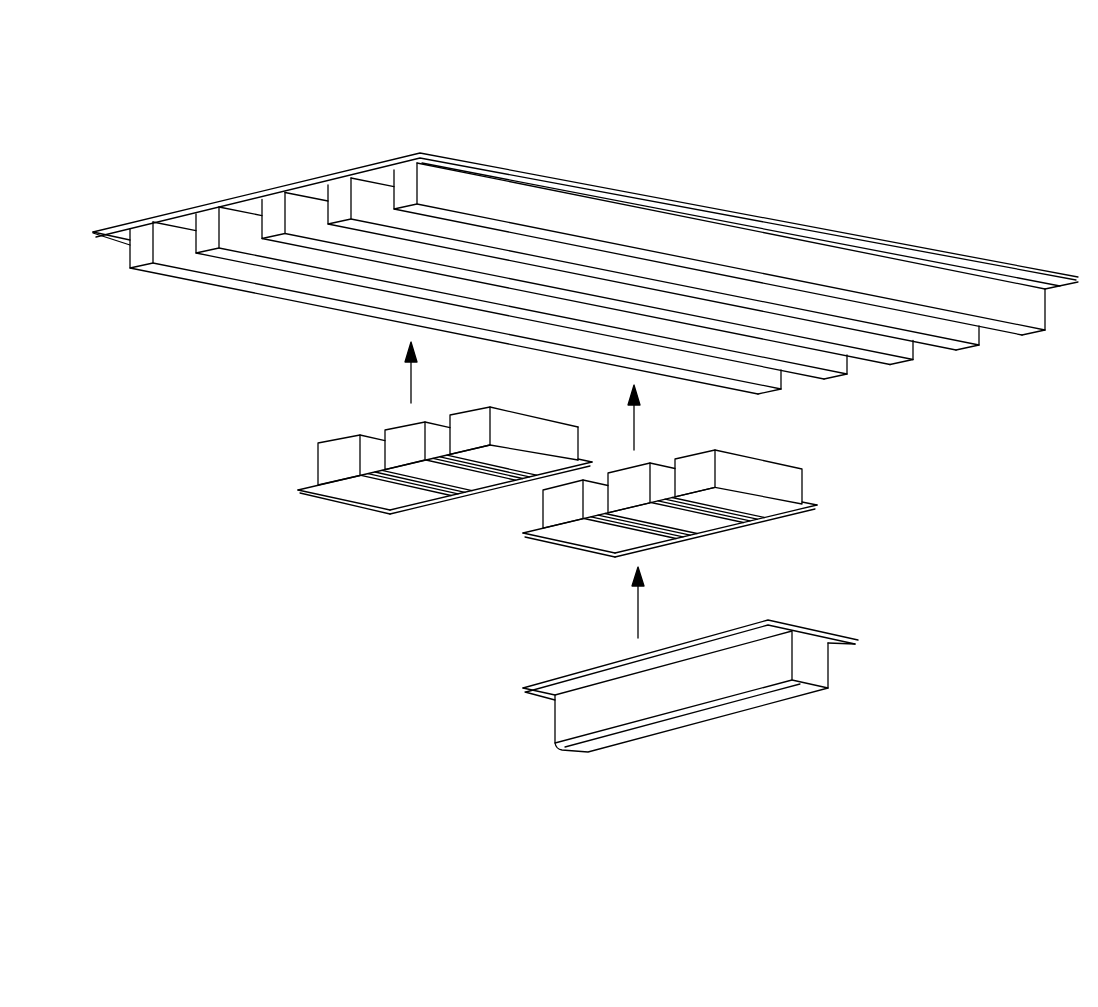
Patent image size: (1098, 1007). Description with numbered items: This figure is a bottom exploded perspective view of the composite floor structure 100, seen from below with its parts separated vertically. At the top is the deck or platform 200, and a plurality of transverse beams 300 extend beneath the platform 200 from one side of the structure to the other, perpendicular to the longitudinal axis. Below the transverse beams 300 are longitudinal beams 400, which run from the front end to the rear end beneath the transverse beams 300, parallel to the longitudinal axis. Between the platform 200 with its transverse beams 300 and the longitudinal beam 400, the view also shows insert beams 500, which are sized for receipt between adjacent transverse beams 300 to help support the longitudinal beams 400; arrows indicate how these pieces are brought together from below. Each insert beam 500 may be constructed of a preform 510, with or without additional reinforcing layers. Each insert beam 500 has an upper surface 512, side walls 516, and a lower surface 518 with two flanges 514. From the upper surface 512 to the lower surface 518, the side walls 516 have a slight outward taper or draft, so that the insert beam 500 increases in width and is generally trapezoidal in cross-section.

The composite floor structure 100 is at (888, 118).
The platform 200 is at (557, 174).
The transverse beams 300 is at (872, 272).
The longitudinal beams 400 is at (768, 665).
The insert beams 500 is at (648, 508).
The preform 510 is at (452, 461).
The upper surface 512 is at (571, 470).
The flanges 514 is at (527, 536).
The side walls 516 is at (543, 504).
The lower surface 518 is at (570, 526).